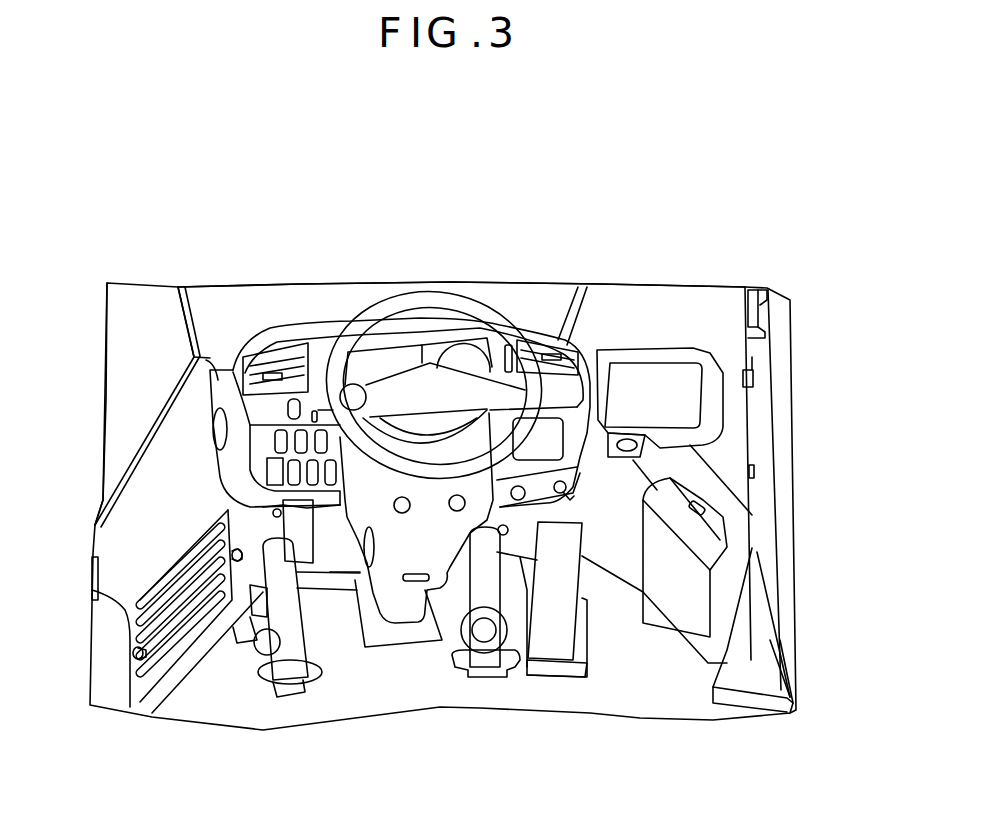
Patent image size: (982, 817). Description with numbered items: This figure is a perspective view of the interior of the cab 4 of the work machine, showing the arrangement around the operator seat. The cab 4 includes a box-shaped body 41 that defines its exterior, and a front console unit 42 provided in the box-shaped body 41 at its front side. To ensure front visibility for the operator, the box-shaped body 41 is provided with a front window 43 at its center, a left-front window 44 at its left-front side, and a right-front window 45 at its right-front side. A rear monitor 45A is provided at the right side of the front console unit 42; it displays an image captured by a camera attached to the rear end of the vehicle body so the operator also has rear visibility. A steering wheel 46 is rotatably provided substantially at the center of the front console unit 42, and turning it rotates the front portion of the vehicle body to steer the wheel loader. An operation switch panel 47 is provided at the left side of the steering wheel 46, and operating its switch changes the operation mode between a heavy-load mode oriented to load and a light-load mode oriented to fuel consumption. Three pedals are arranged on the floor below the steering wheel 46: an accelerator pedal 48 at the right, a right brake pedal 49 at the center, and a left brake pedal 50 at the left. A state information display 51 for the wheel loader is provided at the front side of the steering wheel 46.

The cab 4 is at (518, 239).
The box-shaped body 41 is at (153, 462).
The front console unit 42 is at (530, 318).
The front window 43 is at (302, 307).
The left-front window 44 is at (143, 307).
The right-front window 45 is at (660, 307).
The rear monitor 45A is at (690, 394).
The steering wheel 46 is at (433, 293).
The operation switch panel 47 is at (275, 442).
The accelerator pedal 48 is at (560, 627).
The right brake pedal 49 is at (478, 643).
The left brake pedal 50 is at (290, 660).
The state information display 51 is at (382, 358).